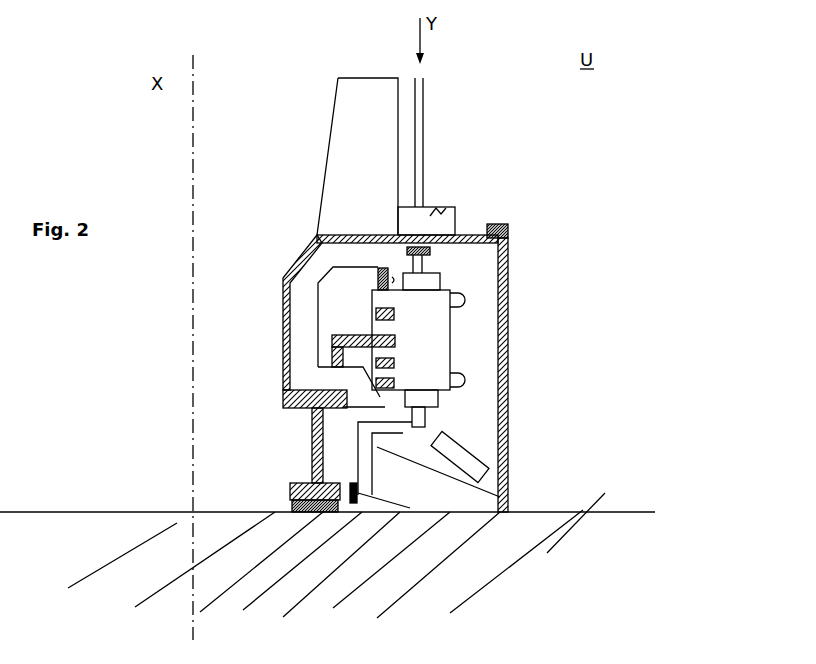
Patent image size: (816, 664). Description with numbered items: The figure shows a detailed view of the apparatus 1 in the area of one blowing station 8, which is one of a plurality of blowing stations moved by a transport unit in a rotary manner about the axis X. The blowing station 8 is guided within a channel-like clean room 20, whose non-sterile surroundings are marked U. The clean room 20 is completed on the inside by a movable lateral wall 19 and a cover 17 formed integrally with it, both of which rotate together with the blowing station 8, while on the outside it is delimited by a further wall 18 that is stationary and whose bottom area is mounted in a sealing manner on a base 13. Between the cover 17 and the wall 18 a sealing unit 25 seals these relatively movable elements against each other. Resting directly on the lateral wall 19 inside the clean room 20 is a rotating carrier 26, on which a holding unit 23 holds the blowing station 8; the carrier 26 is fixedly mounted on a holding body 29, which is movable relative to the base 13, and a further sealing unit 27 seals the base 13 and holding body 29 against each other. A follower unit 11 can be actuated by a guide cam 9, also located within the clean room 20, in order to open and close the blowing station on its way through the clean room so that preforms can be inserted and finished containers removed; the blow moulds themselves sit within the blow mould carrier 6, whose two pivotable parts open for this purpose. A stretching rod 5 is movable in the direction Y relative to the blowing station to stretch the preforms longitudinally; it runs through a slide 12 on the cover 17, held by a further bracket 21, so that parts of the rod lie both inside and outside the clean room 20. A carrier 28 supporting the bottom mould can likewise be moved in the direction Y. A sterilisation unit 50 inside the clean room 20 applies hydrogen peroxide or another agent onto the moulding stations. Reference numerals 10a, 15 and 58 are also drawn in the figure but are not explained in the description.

The apparatus 1 is at (288, 140).
The stretching rod 5 is at (417, 155).
The blow mould carrier 6 is at (440, 360).
The blowing station 8 is at (440, 322).
The guide cam 9 is at (482, 537).
The upper part 10a is at (322, 8).
The follower unit 11 is at (478, 492).
The slide 12 is at (452, 207).
The base 13 is at (607, 508).
The fastening bolt 15 is at (440, 248).
The cover 17 is at (365, 236).
The wall 18 is at (507, 297).
The lateral wall 19 is at (283, 323).
The clean room 20 is at (295, 243).
The bracket 21 is at (383, 118).
The holding unit 23 is at (357, 333).
The sealing unit 25 is at (507, 228).
The carrier 26 is at (305, 377).
The further sealing unit 27 is at (292, 503).
The carrier for bottom mould 28 is at (427, 420).
The holding body 29 is at (307, 460).
The sterilisation unit 50 is at (440, 462).
The connecting line 58 is at (378, 272).